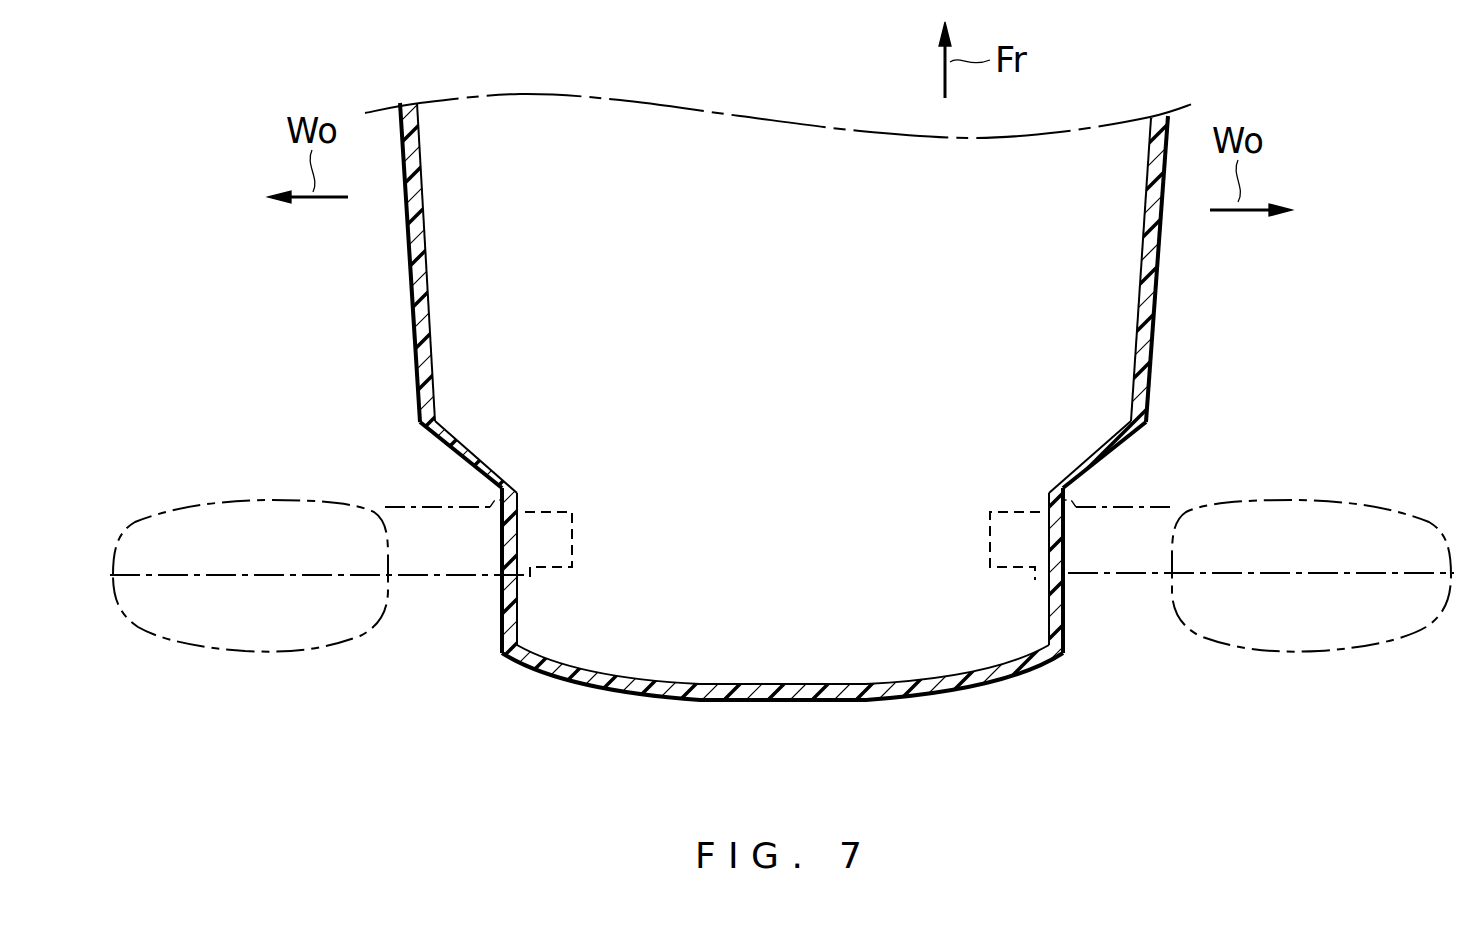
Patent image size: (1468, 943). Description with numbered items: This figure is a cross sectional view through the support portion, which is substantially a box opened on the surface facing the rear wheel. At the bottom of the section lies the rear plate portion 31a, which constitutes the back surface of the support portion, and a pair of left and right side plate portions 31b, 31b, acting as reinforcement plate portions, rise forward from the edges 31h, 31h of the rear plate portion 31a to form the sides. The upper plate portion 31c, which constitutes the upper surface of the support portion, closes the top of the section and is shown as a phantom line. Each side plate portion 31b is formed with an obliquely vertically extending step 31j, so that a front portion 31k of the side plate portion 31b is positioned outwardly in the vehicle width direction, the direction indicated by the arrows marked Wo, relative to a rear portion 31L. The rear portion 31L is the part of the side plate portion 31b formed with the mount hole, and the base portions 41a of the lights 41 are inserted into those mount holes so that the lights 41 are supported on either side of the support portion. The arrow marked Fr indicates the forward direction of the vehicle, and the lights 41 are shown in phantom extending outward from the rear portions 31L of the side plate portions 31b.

The rear plate portion 31a is at (787, 702).
The side plate portion 31b is at (640, 332).
The upper plate portion 31c is at (781, 136).
The front portion 31k is at (424, 310).
The step 31j is at (467, 448).
The rear portion 31L is at (528, 503).
The edge 31h is at (504, 660).
The light 41 is at (330, 636).
The base portion 41a is at (575, 527).